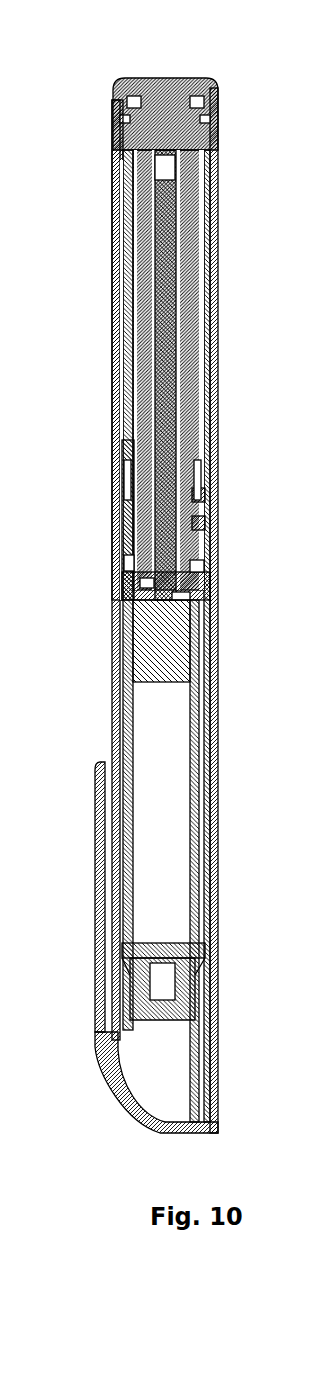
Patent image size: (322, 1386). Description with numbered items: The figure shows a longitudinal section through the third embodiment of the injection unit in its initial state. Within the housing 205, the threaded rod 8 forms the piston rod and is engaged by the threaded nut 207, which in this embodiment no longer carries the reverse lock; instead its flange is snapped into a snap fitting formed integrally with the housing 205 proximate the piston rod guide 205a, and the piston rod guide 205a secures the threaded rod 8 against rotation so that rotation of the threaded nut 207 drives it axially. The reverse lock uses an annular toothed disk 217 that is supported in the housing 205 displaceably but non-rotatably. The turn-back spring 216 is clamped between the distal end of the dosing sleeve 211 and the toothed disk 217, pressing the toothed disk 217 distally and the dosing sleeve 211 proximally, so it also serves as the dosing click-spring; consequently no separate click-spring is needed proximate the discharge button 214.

The discharge button 214 is at (150, 80).
The dosing sleeve 211 is at (120, 135).
The threaded rod 8 is at (135, 222).
The threaded nut 207 is at (150, 403).
The housing 205 is at (112, 535).
The turn-back spring 216 is at (205, 498).
The toothed disk 217 is at (205, 527).
The piston rod guide 205a is at (210, 580).